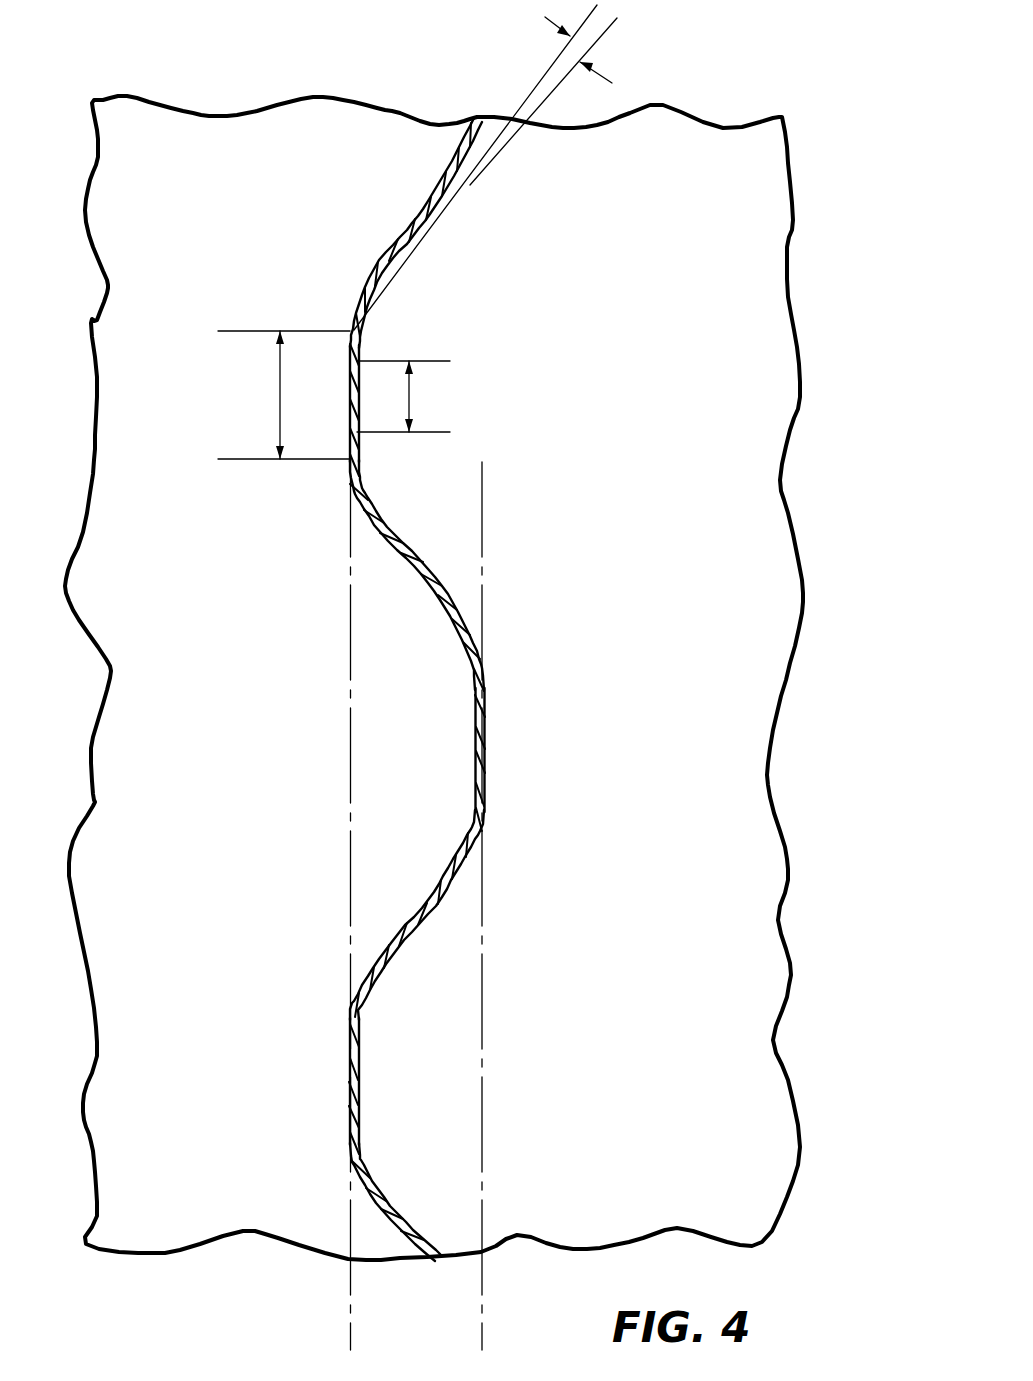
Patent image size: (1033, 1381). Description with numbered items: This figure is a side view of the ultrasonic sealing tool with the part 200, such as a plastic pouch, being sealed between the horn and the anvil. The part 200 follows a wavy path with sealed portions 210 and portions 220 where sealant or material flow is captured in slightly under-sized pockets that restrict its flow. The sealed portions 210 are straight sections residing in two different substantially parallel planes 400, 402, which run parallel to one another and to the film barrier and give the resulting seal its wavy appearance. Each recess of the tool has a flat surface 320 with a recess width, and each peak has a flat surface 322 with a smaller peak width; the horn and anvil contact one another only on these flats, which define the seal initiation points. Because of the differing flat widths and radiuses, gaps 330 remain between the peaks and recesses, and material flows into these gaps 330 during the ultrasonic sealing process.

The part 200 is at (476, 827).
The sealed portions 210 is at (350, 404).
The sealant flow portions 220 is at (413, 557).
The recess flat surface 320 is at (278, 394).
The peak flat surface 322 is at (410, 393).
The gaps 330 is at (568, 63).
The first seal plane 400 is at (350, 1330).
The second seal plane 402 is at (482, 1313).